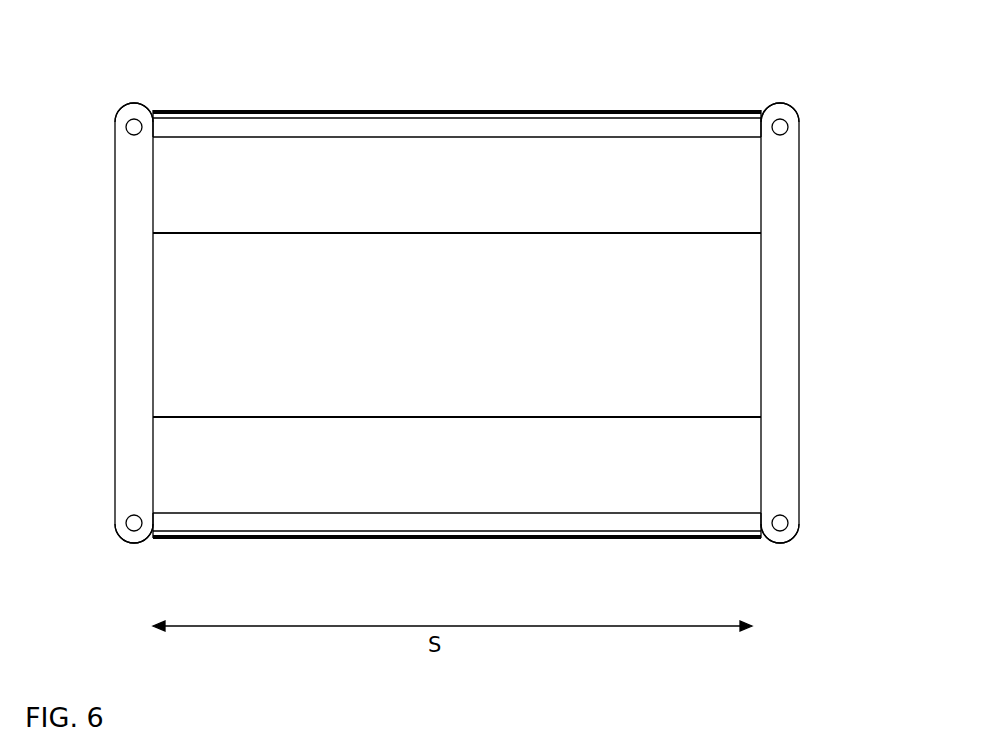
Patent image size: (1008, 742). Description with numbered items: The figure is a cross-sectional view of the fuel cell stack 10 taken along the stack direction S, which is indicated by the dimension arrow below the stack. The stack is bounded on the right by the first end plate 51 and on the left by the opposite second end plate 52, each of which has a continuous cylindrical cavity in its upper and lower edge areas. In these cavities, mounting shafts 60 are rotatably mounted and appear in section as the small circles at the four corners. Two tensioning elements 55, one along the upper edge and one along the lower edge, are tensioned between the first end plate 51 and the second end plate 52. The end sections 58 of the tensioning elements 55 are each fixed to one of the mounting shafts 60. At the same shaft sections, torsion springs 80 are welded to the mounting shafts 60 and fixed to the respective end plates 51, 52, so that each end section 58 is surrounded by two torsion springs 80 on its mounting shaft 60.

The fuel cell stack 10 is at (482, 66).
The first end plate 51 is at (788, 310).
The second end plate 52 is at (133, 283).
The tensioning element 55 is at (416, 110).
The end section 58 is at (153, 110).
The mounting shaft 60 is at (133, 128).
The torsion spring 80 is at (125, 103).